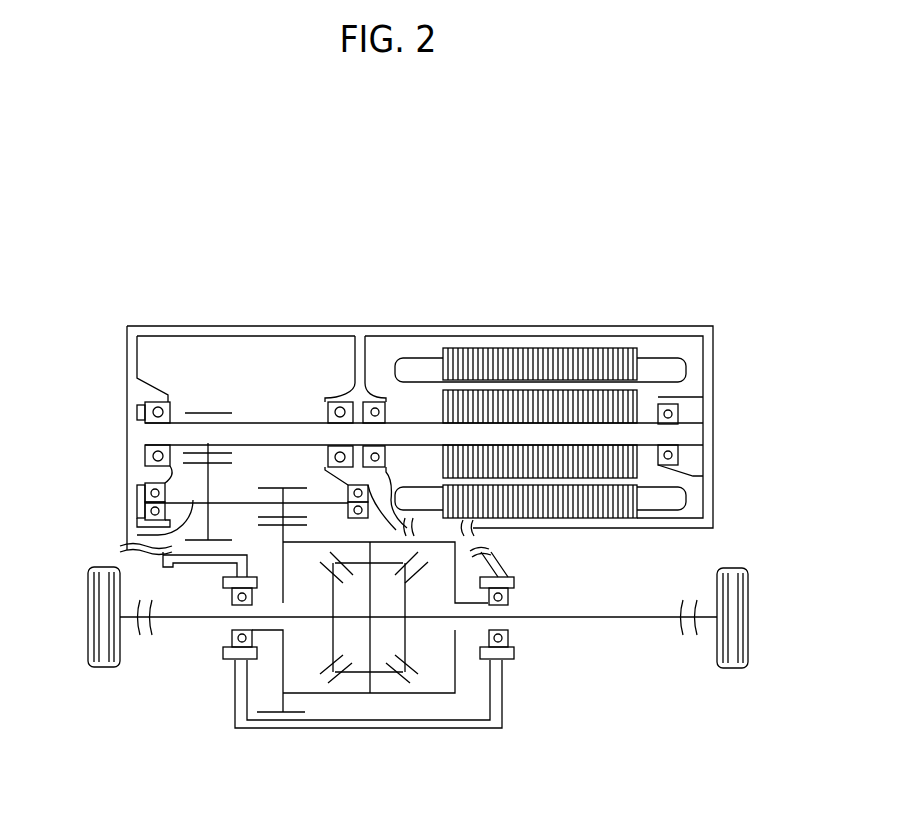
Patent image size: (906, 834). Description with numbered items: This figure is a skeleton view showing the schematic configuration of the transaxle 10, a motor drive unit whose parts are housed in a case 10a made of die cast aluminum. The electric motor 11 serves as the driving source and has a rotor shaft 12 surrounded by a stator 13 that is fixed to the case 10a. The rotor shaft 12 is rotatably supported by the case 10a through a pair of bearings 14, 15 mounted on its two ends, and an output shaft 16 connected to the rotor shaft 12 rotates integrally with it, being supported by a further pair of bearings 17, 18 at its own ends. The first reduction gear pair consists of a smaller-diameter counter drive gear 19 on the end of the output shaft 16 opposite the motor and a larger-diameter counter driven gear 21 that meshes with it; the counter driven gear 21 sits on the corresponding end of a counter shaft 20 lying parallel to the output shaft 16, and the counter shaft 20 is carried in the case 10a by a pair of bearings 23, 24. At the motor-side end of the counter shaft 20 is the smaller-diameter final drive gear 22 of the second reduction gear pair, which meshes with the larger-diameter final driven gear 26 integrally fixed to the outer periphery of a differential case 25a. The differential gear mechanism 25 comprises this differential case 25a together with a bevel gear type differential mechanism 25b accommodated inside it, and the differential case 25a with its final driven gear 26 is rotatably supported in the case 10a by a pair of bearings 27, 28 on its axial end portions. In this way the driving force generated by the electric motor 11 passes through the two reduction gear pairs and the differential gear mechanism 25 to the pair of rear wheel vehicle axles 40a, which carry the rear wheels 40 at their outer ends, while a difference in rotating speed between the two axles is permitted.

The transaxle 10 is at (459, 325).
The case 10a is at (337, 326).
The electric motor 11 is at (536, 348).
The rotor shaft 12 is at (680, 436).
The stator 13 is at (584, 348).
The bearing 14 is at (386, 411).
The bearing 15 is at (680, 405).
The output shaft 16 is at (254, 423).
The bearing 17 is at (145, 420).
The bearing 18 is at (328, 408).
The counter drive gear 19 is at (198, 413).
The counter shaft 20 is at (137, 534).
The counter driven gear 21 is at (205, 548).
The final drive gear 22 is at (280, 487).
The bearing 23 is at (145, 492).
The bearing 24 is at (352, 517).
The differential gear mechanism 25 is at (392, 700).
The differential case 25a is at (433, 695).
The bevel gear type differential mechanism 25b is at (355, 674).
The final driven gear 26 is at (272, 713).
The bearing 27 is at (230, 638).
The bearing 28 is at (510, 637).
The wheel 40 is at (104, 668).
The rear wheel vehicle axle 40a is at (612, 618).